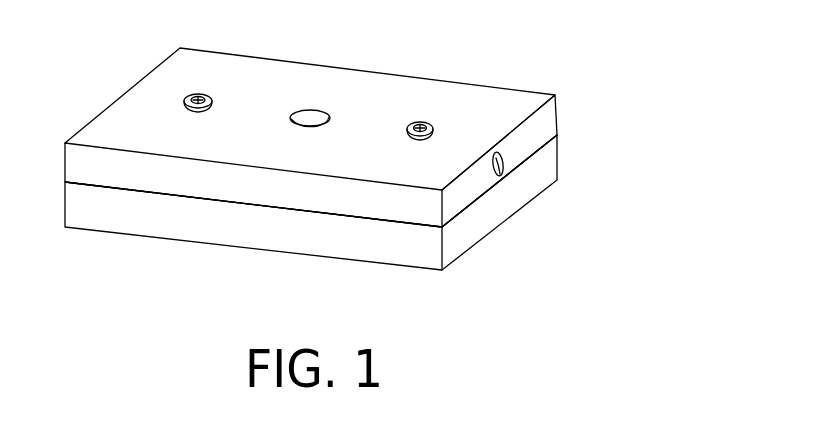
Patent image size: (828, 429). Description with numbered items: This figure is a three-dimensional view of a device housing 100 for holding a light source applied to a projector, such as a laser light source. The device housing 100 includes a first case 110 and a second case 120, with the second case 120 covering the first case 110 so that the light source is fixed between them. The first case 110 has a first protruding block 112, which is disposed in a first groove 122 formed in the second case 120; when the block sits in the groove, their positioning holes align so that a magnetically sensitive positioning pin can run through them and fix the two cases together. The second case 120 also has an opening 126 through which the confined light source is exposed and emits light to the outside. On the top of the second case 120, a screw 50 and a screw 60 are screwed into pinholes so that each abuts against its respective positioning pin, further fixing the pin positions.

The device housing 100 is at (401, 145).
The first case 110 is at (547, 173).
The first protruding block 112 is at (507, 155).
The second case 120 is at (497, 98).
The first groove 122 is at (503, 168).
The opening 126 is at (324, 110).
The screw 50 is at (432, 126).
The screw 60 is at (213, 97).